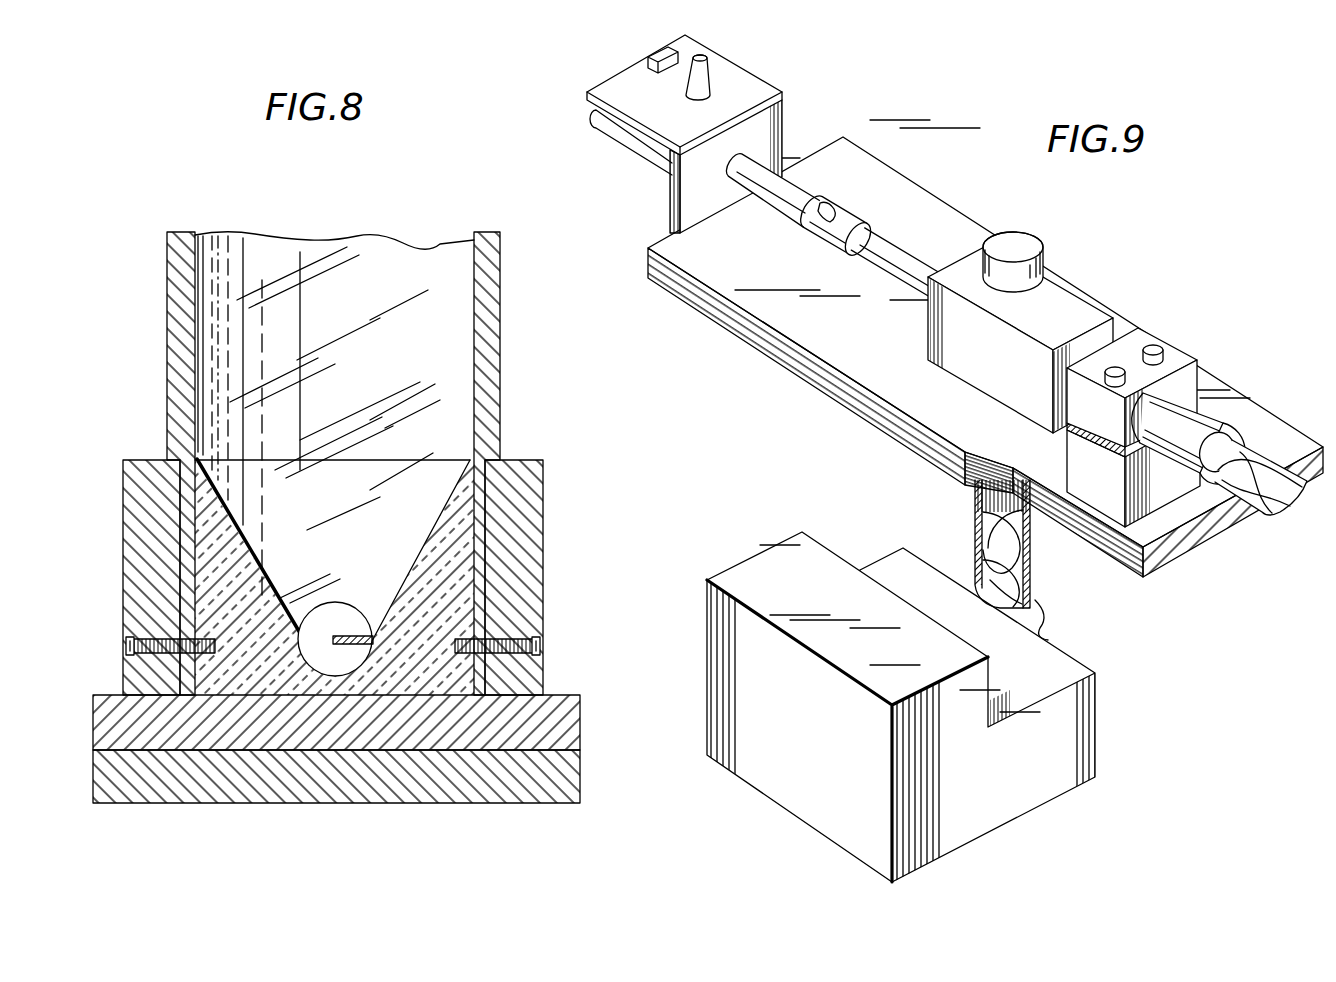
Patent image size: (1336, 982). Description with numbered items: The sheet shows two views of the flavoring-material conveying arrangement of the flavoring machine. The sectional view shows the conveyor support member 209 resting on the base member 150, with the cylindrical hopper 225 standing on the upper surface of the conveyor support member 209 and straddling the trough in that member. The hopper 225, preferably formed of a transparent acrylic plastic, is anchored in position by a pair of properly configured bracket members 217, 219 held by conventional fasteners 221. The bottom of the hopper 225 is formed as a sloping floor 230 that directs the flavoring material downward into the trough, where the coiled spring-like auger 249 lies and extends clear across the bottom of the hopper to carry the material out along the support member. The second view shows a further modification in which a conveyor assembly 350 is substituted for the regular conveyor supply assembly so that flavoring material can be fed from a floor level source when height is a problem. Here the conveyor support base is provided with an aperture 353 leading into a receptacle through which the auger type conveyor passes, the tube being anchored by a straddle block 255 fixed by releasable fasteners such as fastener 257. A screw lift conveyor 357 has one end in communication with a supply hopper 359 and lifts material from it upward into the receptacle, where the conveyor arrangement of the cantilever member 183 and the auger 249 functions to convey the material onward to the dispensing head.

In FIG. 8, the base member 150 is at (573, 785).
In FIG. 8, the conveyor support member 209 is at (573, 727).
In FIG. 8, the bracket member 217 is at (133, 533).
In FIG. 8, the bracket member 219 is at (533, 559).
In FIG. 8, the fasteners 221 is at (124, 647).
In FIG. 8, the cylindrical hopper 225 is at (500, 365).
In FIG. 8, the sloping floor 230 is at (240, 547).
In FIG. 8, the coiled spring-like auger 249 is at (343, 617).
In FIG. 9, the coiled spring-like auger 249 is at (1245, 458).
In FIG. 9, the cantilever member 183 is at (1233, 446).
In FIG. 9, the straddle block 255 is at (1178, 359).
In FIG. 9, the releasable fastener 257 is at (1155, 344).
In FIG. 9, the conveyor assembly 350 is at (1199, 325).
In FIG. 9, the aperture 353 is at (968, 376).
In FIG. 9, the screw lift conveyor 357 is at (1031, 578).
In FIG. 9, the supply hopper 359 is at (967, 831).